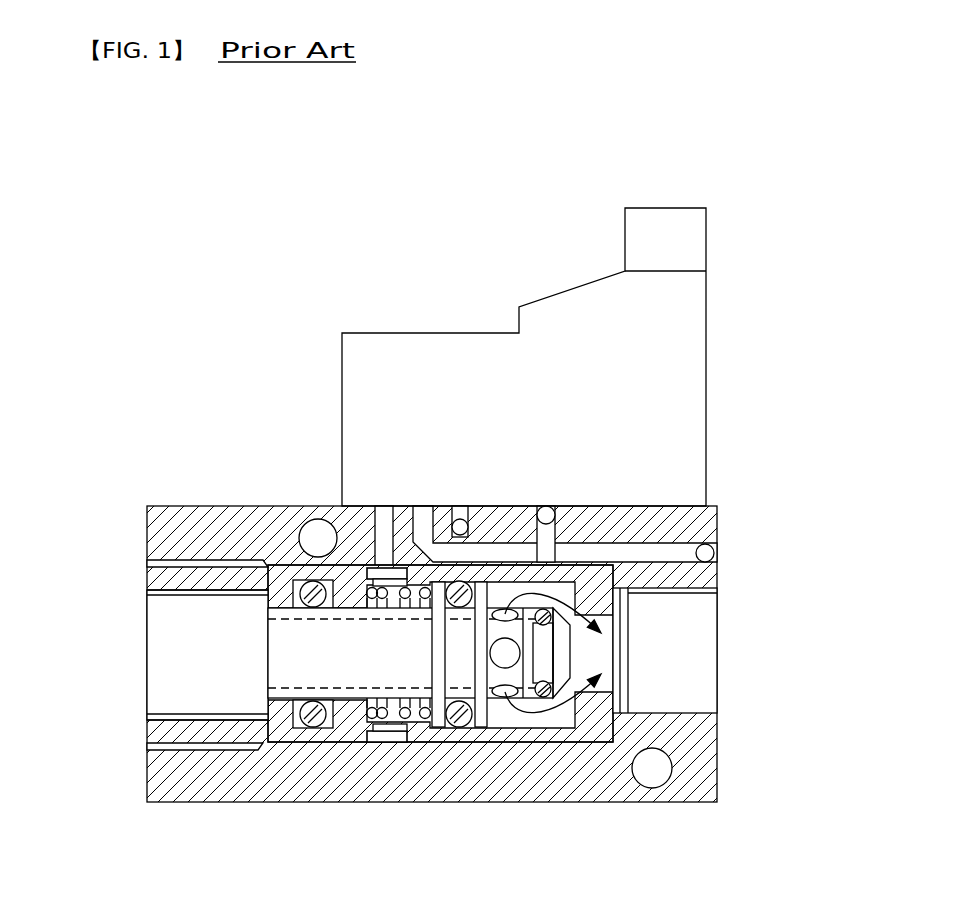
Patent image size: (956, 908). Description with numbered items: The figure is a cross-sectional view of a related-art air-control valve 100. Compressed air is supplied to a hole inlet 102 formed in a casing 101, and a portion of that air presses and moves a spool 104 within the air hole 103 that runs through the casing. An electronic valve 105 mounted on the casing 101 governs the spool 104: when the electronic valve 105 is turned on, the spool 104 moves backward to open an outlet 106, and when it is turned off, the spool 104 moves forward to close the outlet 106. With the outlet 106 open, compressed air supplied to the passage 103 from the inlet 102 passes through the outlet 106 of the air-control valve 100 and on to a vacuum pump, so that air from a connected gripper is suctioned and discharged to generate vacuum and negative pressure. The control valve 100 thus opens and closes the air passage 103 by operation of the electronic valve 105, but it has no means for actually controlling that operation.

The air-control valve 100 is at (387, 203).
The casing 101 is at (517, 780).
The inlet 102 is at (175, 717).
The air hole 103 is at (255, 668).
The spool 104 is at (361, 676).
The electronic valve 105 is at (690, 428).
The outlet 106 is at (694, 717).